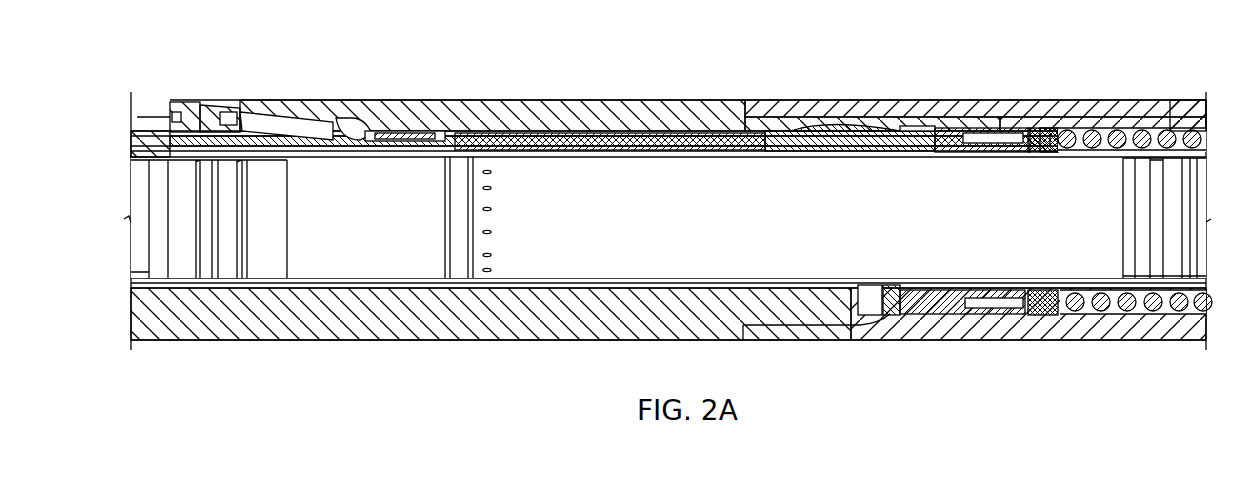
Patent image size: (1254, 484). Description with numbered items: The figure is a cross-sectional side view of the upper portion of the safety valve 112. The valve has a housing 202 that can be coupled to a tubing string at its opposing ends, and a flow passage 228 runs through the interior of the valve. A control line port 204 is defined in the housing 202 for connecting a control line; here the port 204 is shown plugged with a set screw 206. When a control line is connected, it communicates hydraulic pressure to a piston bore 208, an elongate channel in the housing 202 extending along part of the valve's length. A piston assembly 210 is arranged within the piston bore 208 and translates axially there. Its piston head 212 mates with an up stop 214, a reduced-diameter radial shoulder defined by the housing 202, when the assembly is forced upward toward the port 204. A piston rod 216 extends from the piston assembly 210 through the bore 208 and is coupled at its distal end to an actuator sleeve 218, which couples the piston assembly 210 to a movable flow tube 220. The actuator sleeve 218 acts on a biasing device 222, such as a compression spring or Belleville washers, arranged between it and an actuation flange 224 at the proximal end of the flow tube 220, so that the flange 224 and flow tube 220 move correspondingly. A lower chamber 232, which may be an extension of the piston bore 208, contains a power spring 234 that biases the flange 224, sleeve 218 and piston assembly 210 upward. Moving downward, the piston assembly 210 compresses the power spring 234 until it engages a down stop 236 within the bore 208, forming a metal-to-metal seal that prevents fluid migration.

The safety valve 112 is at (598, 68).
The housing 202 is at (697, 101).
The control line port 204 is at (200, 117).
The set screw 206 is at (185, 103).
The piston bore 208 is at (352, 120).
The piston assembly 210 is at (487, 125).
The piston head 212 is at (404, 133).
The up stop 214 is at (373, 135).
The piston rod 216 is at (797, 140).
The actuator sleeve 218 is at (975, 128).
The flow tube 220 is at (1137, 162).
The biasing device 222 is at (1032, 152).
The actuation flange 224 is at (1050, 153).
The flow passage 228 is at (864, 224).
The lower chamber 232 is at (1180, 123).
The power spring 234 is at (1093, 130).
The down stop 236 is at (872, 122).